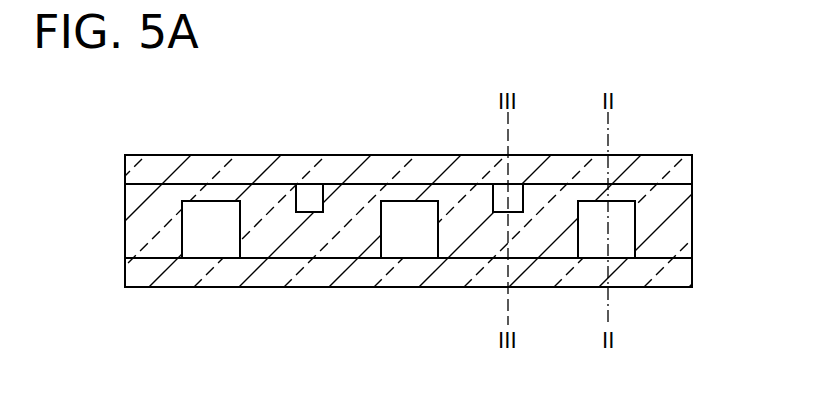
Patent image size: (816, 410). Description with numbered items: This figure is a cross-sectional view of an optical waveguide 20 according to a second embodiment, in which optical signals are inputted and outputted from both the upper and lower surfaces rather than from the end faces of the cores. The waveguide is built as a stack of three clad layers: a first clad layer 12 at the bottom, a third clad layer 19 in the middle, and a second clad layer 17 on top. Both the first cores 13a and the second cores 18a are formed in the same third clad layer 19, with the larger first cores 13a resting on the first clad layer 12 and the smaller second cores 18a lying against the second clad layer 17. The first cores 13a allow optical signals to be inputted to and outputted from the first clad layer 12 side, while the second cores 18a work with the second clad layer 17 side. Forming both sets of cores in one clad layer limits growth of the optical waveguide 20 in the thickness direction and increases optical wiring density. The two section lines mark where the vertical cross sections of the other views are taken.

The optical waveguide 20 is at (117, 130).
The second clad layer 17 is at (684, 162).
The third clad layer 19 is at (685, 207).
The first clad layer 12 is at (682, 267).
The first cores 13a is at (213, 242).
The second cores 18a is at (313, 196).